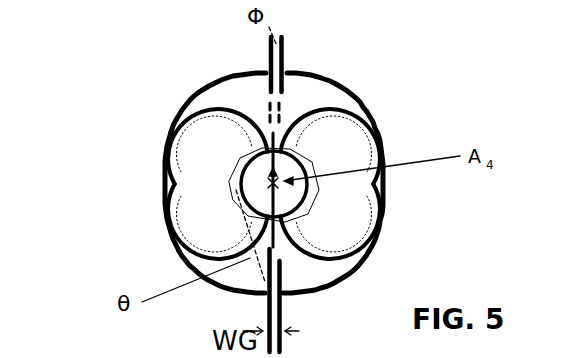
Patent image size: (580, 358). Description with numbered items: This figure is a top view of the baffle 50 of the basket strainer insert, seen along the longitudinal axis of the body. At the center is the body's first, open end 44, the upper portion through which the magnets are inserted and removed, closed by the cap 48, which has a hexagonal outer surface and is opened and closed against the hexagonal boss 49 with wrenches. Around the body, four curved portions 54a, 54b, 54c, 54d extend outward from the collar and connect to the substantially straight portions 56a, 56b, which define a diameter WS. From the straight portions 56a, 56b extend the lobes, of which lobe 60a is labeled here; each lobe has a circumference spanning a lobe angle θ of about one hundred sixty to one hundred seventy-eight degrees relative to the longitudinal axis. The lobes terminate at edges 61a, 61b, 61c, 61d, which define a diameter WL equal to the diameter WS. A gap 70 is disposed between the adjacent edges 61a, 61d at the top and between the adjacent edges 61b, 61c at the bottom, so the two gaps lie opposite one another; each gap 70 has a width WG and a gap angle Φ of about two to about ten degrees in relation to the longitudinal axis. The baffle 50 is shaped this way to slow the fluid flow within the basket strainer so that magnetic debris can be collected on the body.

The baffle 50 is at (284, 159).
The first, open end 44 is at (224, 193).
The cap 48 is at (316, 207).
The hexagonal boss 49 is at (313, 190).
The curved portion 54a is at (190, 105).
The curved portion 54b is at (195, 250).
The curved portion 54c is at (310, 253).
The curved portion 54d is at (313, 115).
The substantially straight portion 56a is at (165, 170).
The substantially straight portion 56b is at (384, 198).
The lobe 60a is at (207, 87).
The edge 61a is at (266, 73).
The edge 61b is at (266, 290).
The edge 61c is at (282, 296).
The edge 61d is at (286, 73).
The gap 70 is at (288, 65).